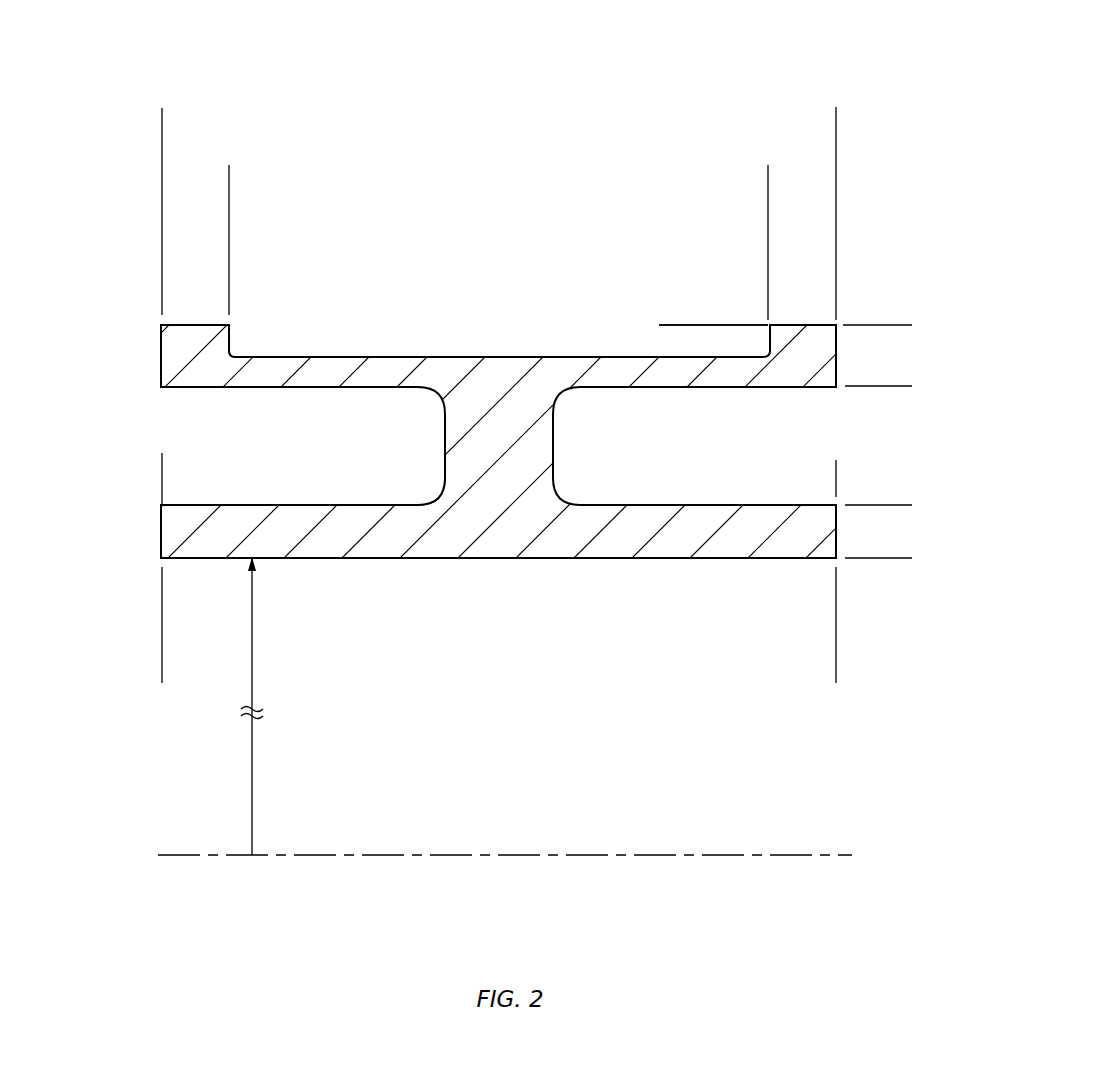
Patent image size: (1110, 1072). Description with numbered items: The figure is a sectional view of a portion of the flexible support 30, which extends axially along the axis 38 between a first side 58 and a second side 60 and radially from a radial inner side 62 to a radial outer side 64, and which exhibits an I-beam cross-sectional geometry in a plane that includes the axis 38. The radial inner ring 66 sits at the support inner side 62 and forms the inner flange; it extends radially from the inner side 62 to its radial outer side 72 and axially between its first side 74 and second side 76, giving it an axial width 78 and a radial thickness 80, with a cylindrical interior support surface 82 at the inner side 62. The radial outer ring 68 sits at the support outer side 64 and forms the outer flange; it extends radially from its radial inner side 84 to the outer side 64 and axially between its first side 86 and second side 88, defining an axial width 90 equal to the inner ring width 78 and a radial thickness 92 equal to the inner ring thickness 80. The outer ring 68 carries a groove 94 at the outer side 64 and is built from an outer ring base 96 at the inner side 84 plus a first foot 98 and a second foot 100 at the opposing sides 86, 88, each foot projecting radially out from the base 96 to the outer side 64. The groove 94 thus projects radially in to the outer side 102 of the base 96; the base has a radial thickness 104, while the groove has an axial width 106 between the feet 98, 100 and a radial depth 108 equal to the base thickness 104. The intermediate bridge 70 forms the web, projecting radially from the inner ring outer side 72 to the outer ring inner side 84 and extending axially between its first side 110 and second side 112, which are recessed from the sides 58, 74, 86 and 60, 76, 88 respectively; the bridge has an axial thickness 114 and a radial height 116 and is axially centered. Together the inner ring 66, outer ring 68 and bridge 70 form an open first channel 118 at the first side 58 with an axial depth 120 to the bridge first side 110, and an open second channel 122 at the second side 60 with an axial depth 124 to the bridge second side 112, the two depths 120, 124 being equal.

The flexible support 30 is at (888, 105).
The axis 38 is at (200, 857).
The first side of the flexible support 58 is at (888, 356).
The second side of the flexible support 60 is at (109, 356).
The radial inner side of the flexible support 62 is at (450, 584).
The radial outer side of the flexible support 64 is at (196, 325).
The radial inner ring 66 is at (182, 504).
The radial outer ring 68 is at (252, 410).
The intermediate bridge 70 is at (445, 474).
The radial outer side of the support inner ring 72 is at (243, 503).
The inner ring first side 74 is at (837, 533).
The inner ring second side 76 is at (162, 530).
The axial width of the inner ring 78 is at (836, 658).
The radial thickness of the inner ring 80 is at (897, 558).
The interior support surface 82 is at (197, 562).
The radial inner side of the support outer ring 84 is at (197, 388).
The outer ring first side 86 is at (837, 357).
The outer ring second side 88 is at (162, 353).
The axial width of the outer ring 90 is at (836, 134).
The radial thickness of the outer ring 92 is at (897, 325).
The groove 94 is at (559, 340).
The outer ring base 96 is at (717, 373).
The first outer ring foot 98 is at (768, 323).
The second outer ring foot 100 is at (233, 352).
The outer side of the outer ring base 102 is at (293, 356).
The radial thickness of the outer ring base 104 is at (375, 433).
The axial width of the groove 106 is at (768, 192).
The radial depth of the groove 108 is at (686, 270).
The bridge first side 110 is at (555, 444).
The bridge second side 112 is at (445, 443).
The axial thickness of the bridge 114 is at (445, 428).
The radial height of the bridge 116 is at (897, 505).
The first channel 118 is at (673, 448).
The axial depth of the first channel 120 is at (836, 469).
The second channel 122 is at (323, 442).
The axial depth of the second channel 124 is at (445, 462).